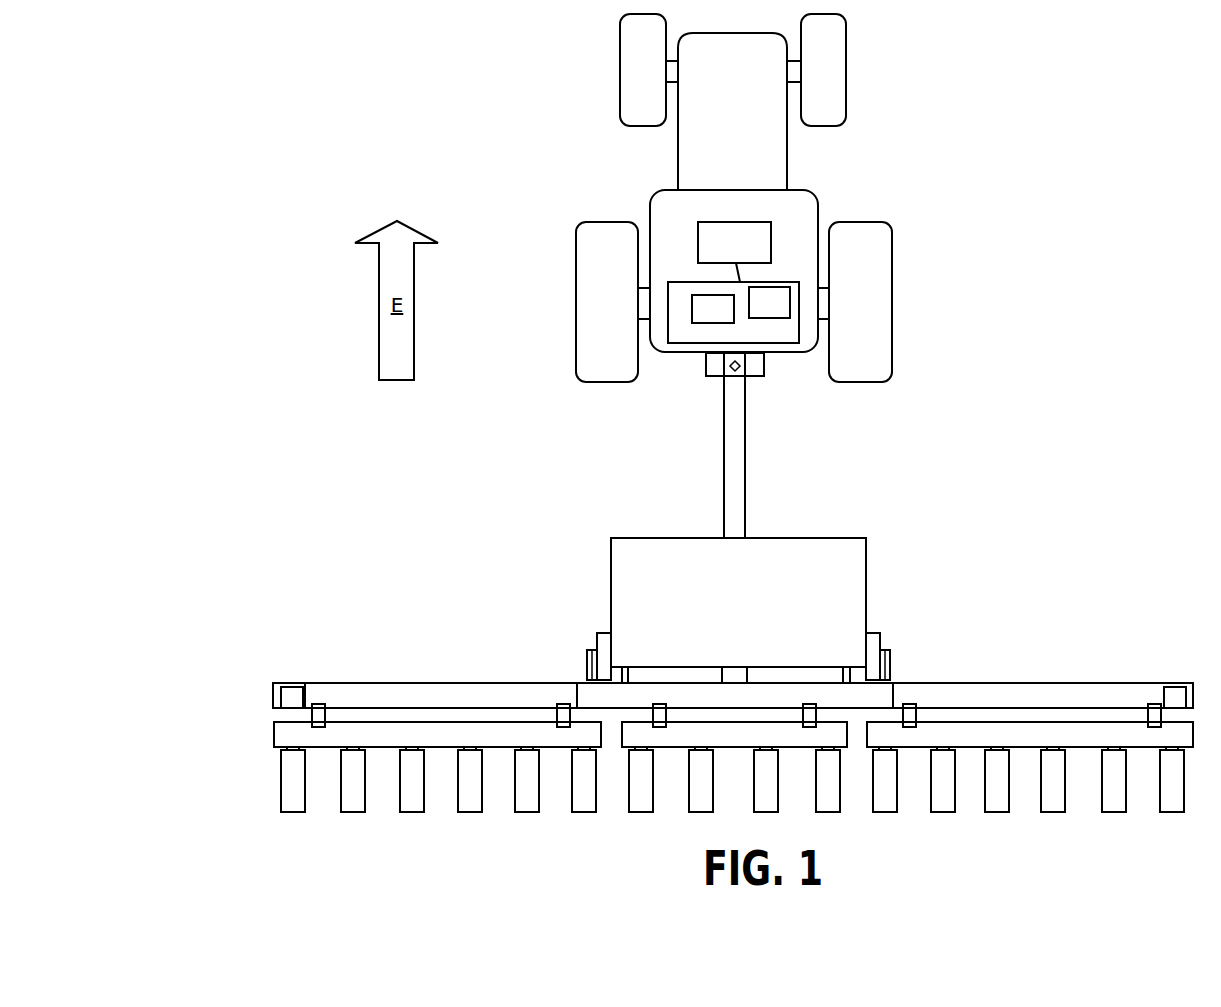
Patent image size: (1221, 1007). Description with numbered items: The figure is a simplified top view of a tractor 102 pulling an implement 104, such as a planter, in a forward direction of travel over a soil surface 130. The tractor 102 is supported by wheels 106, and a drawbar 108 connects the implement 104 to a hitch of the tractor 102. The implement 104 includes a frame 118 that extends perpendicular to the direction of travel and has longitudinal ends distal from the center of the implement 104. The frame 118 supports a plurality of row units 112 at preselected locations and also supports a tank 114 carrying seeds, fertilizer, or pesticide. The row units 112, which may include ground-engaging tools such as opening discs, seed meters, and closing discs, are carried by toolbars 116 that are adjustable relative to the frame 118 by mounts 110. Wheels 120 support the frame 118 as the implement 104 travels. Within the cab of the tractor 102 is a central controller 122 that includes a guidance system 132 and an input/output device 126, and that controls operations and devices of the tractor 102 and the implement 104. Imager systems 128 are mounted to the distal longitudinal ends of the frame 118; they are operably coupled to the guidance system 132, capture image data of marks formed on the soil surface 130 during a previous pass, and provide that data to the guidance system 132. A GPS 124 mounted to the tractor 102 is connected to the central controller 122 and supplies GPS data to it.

The tractor 102 is at (688, 148).
The implement 104 is at (700, 629).
The wheels 106 is at (878, 348).
The drawbar 108 is at (724, 466).
The mounts 110 is at (562, 700).
The row units 112 is at (472, 767).
The tank 114 is at (855, 557).
The toolbars 116 is at (287, 732).
The frame 118 is at (392, 690).
The wheels 120 is at (878, 643).
The central controller 122 is at (777, 282).
The GPS 124 is at (734, 252).
The input/output device 126 is at (734, 320).
The imager systems 128 is at (285, 685).
The soil surface 130 is at (492, 464).
The guidance system 132 is at (790, 302).